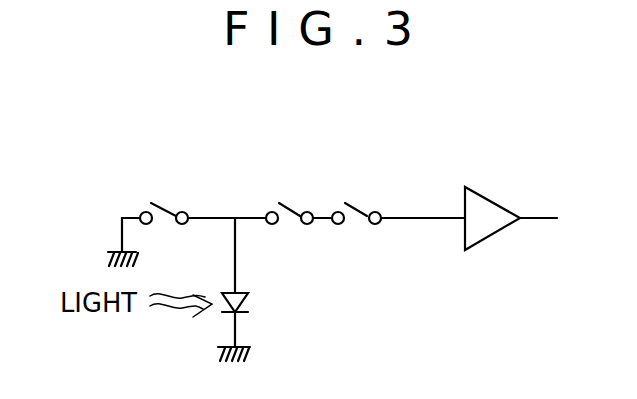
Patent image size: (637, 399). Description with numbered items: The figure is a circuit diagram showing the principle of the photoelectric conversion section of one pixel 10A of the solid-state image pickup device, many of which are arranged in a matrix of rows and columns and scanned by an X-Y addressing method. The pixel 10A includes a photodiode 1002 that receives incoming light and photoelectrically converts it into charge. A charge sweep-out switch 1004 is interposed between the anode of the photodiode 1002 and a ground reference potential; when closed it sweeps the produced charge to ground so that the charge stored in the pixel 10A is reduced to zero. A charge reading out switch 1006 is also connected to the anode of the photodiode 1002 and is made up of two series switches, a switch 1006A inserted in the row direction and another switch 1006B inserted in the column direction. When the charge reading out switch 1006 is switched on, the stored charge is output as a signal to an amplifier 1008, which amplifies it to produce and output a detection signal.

The pixel 10A is at (107, 140).
The photodiode 1002 is at (248, 303).
The charge sweep-out switch 1004 is at (159, 202).
The charge reading out switch 1006 is at (365, 150).
The switch 1006A is at (287, 202).
The switch 1006B is at (353, 202).
The amplifier 1008 is at (495, 200).